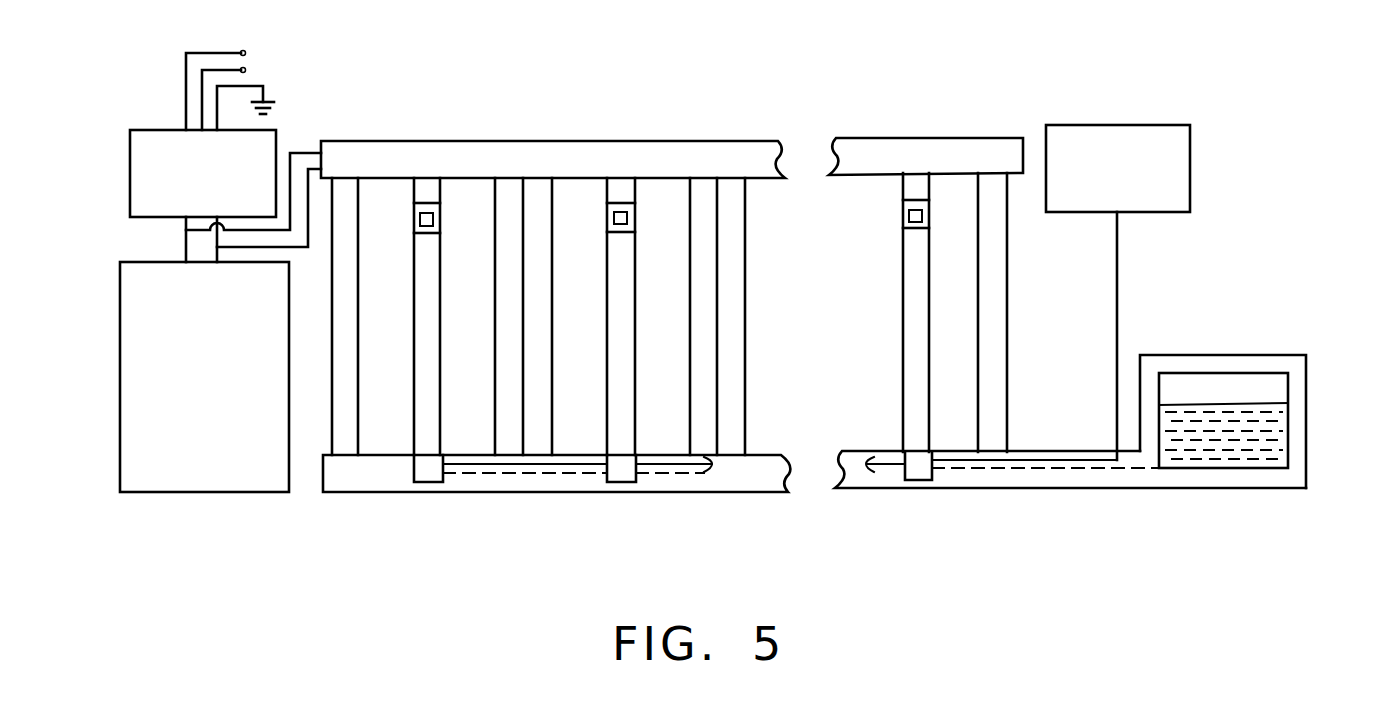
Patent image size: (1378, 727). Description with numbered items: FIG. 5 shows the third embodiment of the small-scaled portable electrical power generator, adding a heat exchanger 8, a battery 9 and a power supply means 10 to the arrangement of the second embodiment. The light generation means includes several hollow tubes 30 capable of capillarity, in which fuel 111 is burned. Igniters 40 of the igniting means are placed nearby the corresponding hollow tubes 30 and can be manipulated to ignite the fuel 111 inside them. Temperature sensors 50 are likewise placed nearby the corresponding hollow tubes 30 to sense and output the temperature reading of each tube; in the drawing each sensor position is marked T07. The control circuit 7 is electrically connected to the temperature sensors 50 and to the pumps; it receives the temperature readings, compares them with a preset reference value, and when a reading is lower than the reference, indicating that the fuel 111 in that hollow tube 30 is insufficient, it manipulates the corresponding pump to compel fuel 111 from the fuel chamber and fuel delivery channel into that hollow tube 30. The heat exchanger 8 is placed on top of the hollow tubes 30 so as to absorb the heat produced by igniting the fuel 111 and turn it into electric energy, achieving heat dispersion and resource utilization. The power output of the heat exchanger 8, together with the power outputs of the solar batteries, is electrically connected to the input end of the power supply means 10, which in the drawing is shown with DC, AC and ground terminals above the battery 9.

The control circuit 7 is at (1180, 140).
The heat exchanger 8 is at (745, 145).
The battery 9 is at (130, 371).
The power supply means 10 is at (130, 170).
The hollow tube 30 is at (432, 295).
The igniter 40 is at (434, 220).
The temperature sensor 50 is at (440, 197).
The sensor terminal T07 is at (414, 190).
The fuel 111 is at (1275, 439).